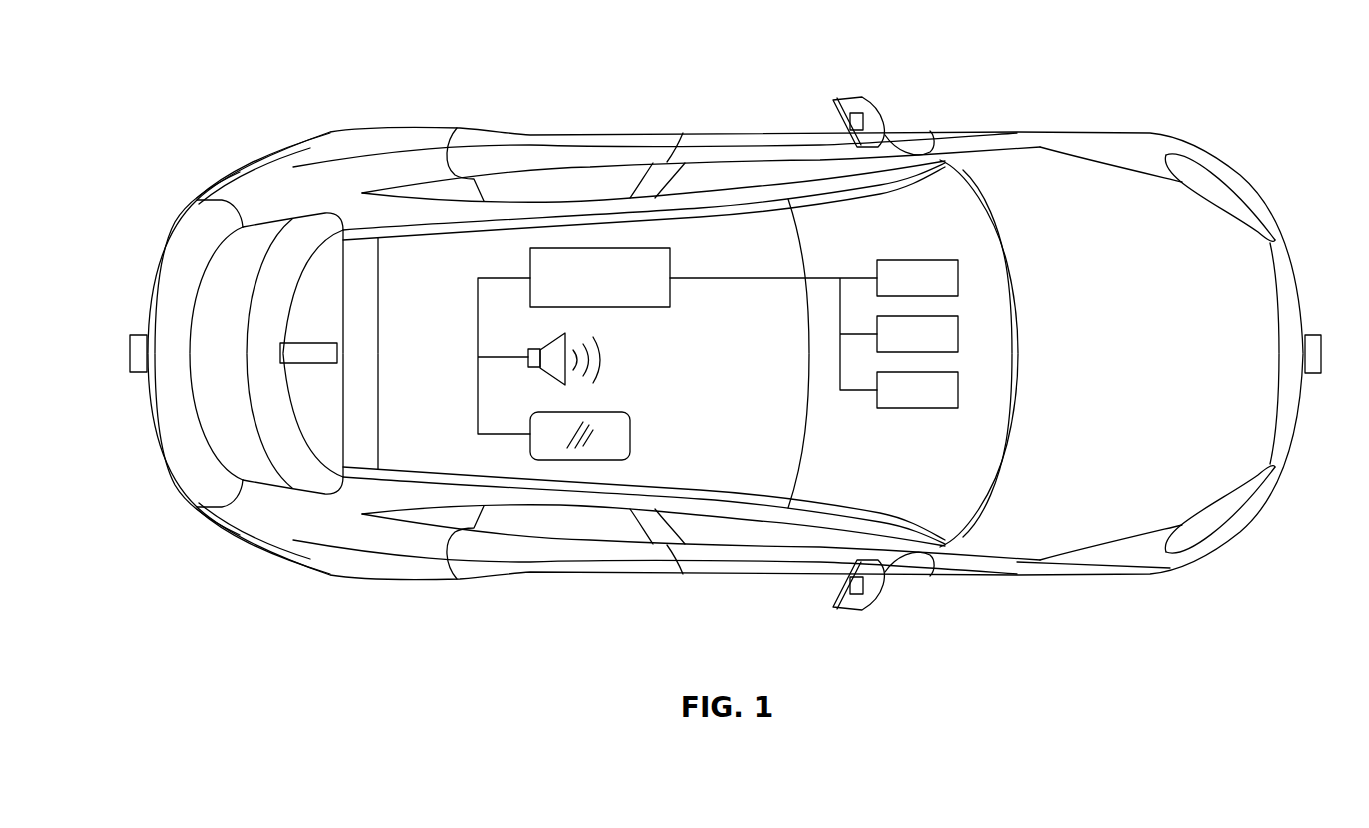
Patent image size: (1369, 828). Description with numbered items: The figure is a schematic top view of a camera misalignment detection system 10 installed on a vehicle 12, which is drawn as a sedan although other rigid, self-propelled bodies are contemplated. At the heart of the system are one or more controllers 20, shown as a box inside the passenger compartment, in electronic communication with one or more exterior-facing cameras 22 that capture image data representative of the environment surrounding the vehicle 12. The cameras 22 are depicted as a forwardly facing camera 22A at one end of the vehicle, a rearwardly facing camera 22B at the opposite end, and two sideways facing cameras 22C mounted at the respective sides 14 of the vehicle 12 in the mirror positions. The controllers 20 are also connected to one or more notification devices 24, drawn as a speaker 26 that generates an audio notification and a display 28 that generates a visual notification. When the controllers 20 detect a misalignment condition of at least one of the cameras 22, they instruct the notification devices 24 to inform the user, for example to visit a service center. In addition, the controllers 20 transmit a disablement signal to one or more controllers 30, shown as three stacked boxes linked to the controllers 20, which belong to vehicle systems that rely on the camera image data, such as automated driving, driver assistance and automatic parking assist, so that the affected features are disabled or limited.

The camera misalignment detection system 10 is at (702, 339).
The vehicle 12 is at (261, 557).
The sides of the vehicle 14 is at (527, 134).
The controller 20 is at (584, 293).
The camera 22 is at (1331, 350).
The forwardly facing camera 22A is at (1318, 374).
The rearwardly facing camera 22B is at (130, 348).
The sideways facing camera 22C is at (857, 118).
The notification device 24 is at (543, 369).
The speaker 26 is at (528, 357).
The display 28 is at (633, 435).
The controller 30 is at (901, 294).